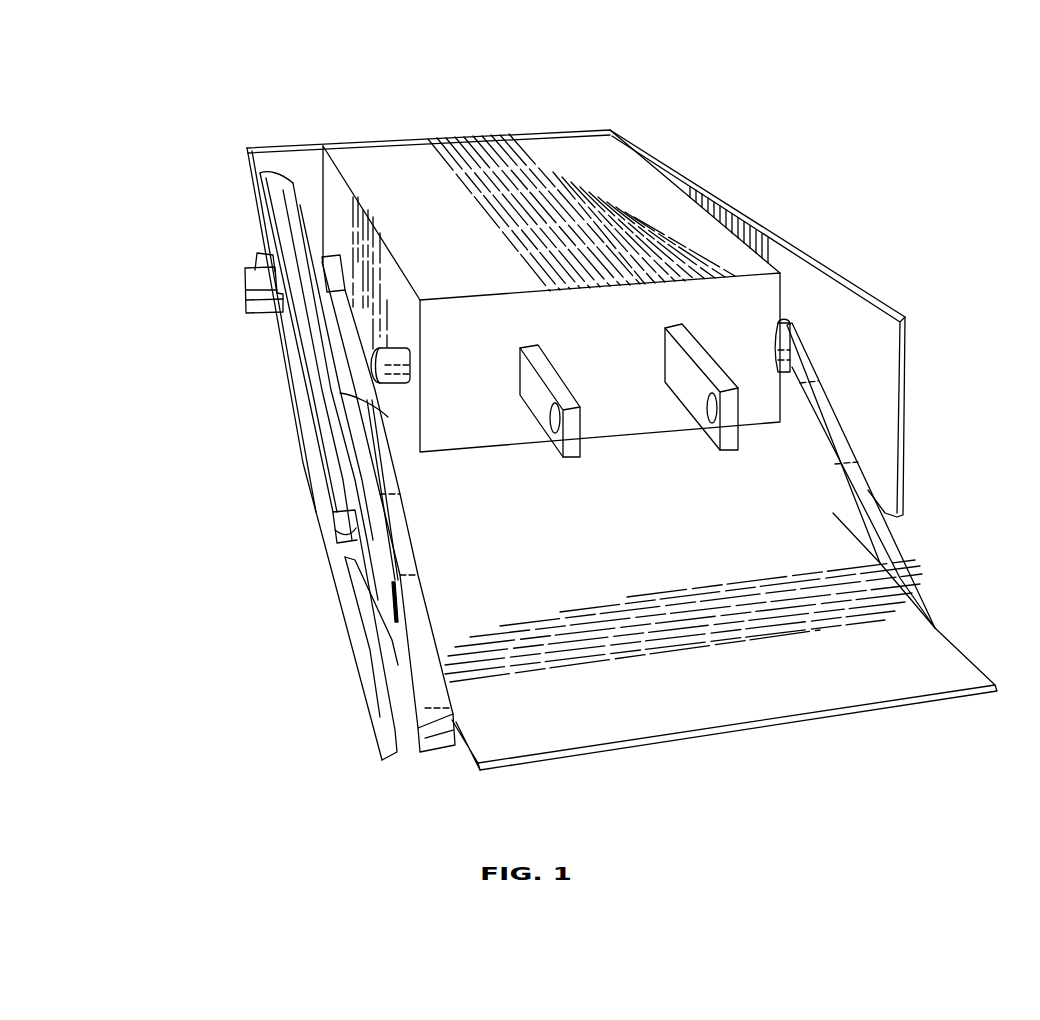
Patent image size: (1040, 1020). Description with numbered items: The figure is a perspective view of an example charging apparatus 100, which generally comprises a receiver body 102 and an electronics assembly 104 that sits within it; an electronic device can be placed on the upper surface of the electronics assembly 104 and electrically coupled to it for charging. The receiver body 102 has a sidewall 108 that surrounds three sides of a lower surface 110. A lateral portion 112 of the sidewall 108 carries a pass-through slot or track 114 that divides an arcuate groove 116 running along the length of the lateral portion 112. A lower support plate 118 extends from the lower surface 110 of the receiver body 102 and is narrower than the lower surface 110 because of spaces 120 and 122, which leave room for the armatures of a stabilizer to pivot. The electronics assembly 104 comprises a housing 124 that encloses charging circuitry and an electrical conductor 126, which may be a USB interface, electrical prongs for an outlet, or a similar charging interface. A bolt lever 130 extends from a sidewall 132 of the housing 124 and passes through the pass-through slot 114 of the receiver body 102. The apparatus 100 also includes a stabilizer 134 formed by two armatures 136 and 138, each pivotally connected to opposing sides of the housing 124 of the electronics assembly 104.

The charging apparatus 100 is at (893, 287).
The receiver body 102 is at (866, 359).
The electronics assembly 104 is at (630, 222).
The sidewall 108 is at (690, 283).
The lower surface 110 is at (490, 508).
The lateral portion 112 is at (243, 160).
The pass-through slot or track 114 is at (307, 360).
The arcuate groove 116 is at (260, 249).
The lower support plate 118 is at (740, 691).
The space 120 is at (403, 745).
The space 122 is at (930, 594).
The housing 124 is at (680, 258).
The electrical conductor 126 is at (713, 360).
The bolt lever 130 is at (250, 292).
The sidewall of the housing 132 is at (346, 230).
The stabilizer 134 is at (392, 638).
The armature 136 is at (430, 673).
The armature 138 is at (883, 545).